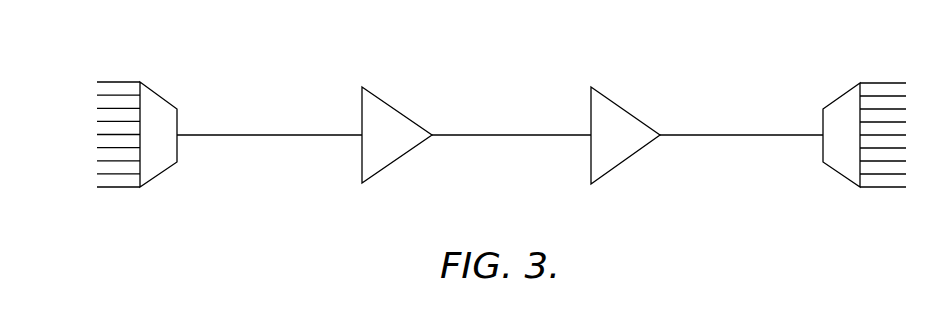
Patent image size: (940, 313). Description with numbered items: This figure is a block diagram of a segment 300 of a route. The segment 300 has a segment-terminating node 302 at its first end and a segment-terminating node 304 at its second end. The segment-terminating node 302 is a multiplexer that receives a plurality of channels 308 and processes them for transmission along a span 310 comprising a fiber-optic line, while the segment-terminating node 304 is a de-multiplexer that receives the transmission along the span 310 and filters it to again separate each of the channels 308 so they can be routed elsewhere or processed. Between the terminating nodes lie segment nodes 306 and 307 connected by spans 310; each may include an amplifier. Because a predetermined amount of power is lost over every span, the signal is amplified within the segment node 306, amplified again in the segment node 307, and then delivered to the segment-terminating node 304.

The segment 300 is at (269, 40).
The segment-terminating node 302 is at (163, 96).
The segment-terminating node 304 is at (842, 95).
The segment node 306 is at (407, 115).
The segment node 307 is at (628, 108).
The channels 308 is at (115, 190).
The span 310 is at (297, 137).